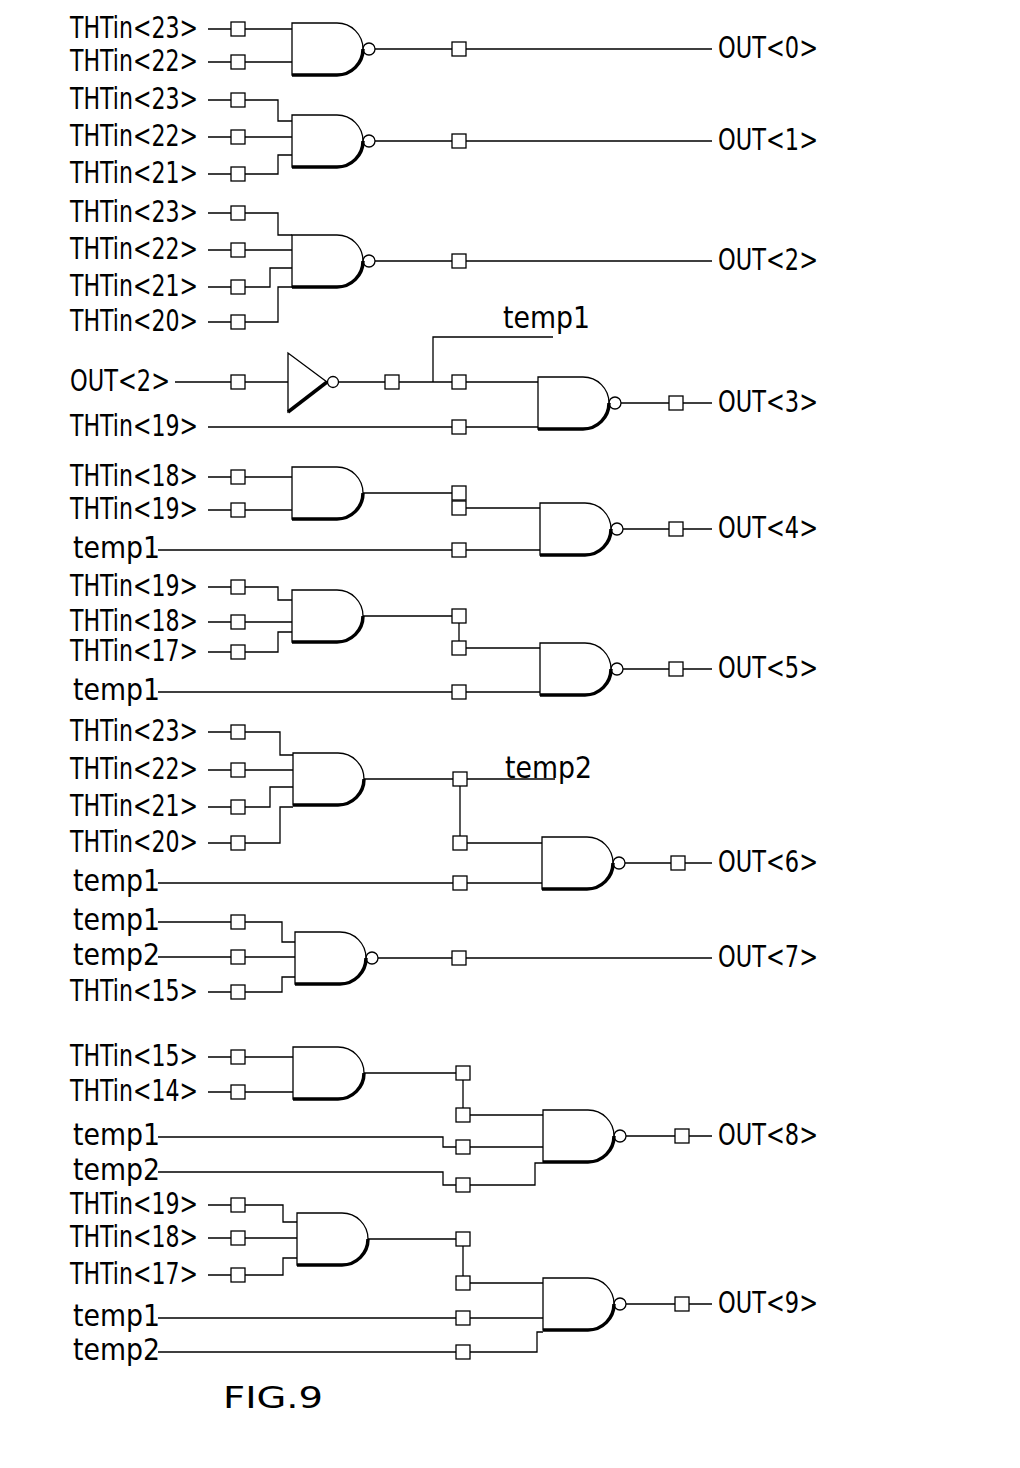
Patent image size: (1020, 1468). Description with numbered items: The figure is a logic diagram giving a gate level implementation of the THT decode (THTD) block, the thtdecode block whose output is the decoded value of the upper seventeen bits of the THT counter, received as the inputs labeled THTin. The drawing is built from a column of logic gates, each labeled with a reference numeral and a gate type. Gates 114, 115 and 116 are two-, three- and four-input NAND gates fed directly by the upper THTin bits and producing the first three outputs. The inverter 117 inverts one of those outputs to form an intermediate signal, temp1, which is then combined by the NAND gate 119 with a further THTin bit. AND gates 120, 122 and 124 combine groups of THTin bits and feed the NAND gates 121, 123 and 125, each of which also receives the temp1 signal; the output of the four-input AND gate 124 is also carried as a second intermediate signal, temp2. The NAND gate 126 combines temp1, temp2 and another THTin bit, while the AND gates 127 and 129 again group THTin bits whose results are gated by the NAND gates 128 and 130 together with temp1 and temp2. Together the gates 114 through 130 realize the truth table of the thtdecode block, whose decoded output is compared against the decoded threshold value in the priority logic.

The NAND2 gate 114 is at (330, 49).
The NAND3 gate 115 is at (330, 129).
The NAND4 gate 116 is at (330, 252).
The inverter 117 is at (303, 374).
The NAND2 gate 119 is at (590, 398).
The AND2 gate 120 is at (324, 488).
The NAND2 gate 121 is at (591, 524).
The AND3 gate 122 is at (324, 610).
The NAND2 gate 123 is at (591, 664).
The AND4 gate 124 is at (324, 772).
The NAND2 gate 125 is at (593, 858).
The NAND3 gate 126 is at (331, 948).
The AND2 gate 127 is at (324, 1068).
The NAND3 gate 128 is at (587, 1131).
The AND3 gate 129 is at (327, 1230).
The NAND3 gate 130 is at (593, 1300).